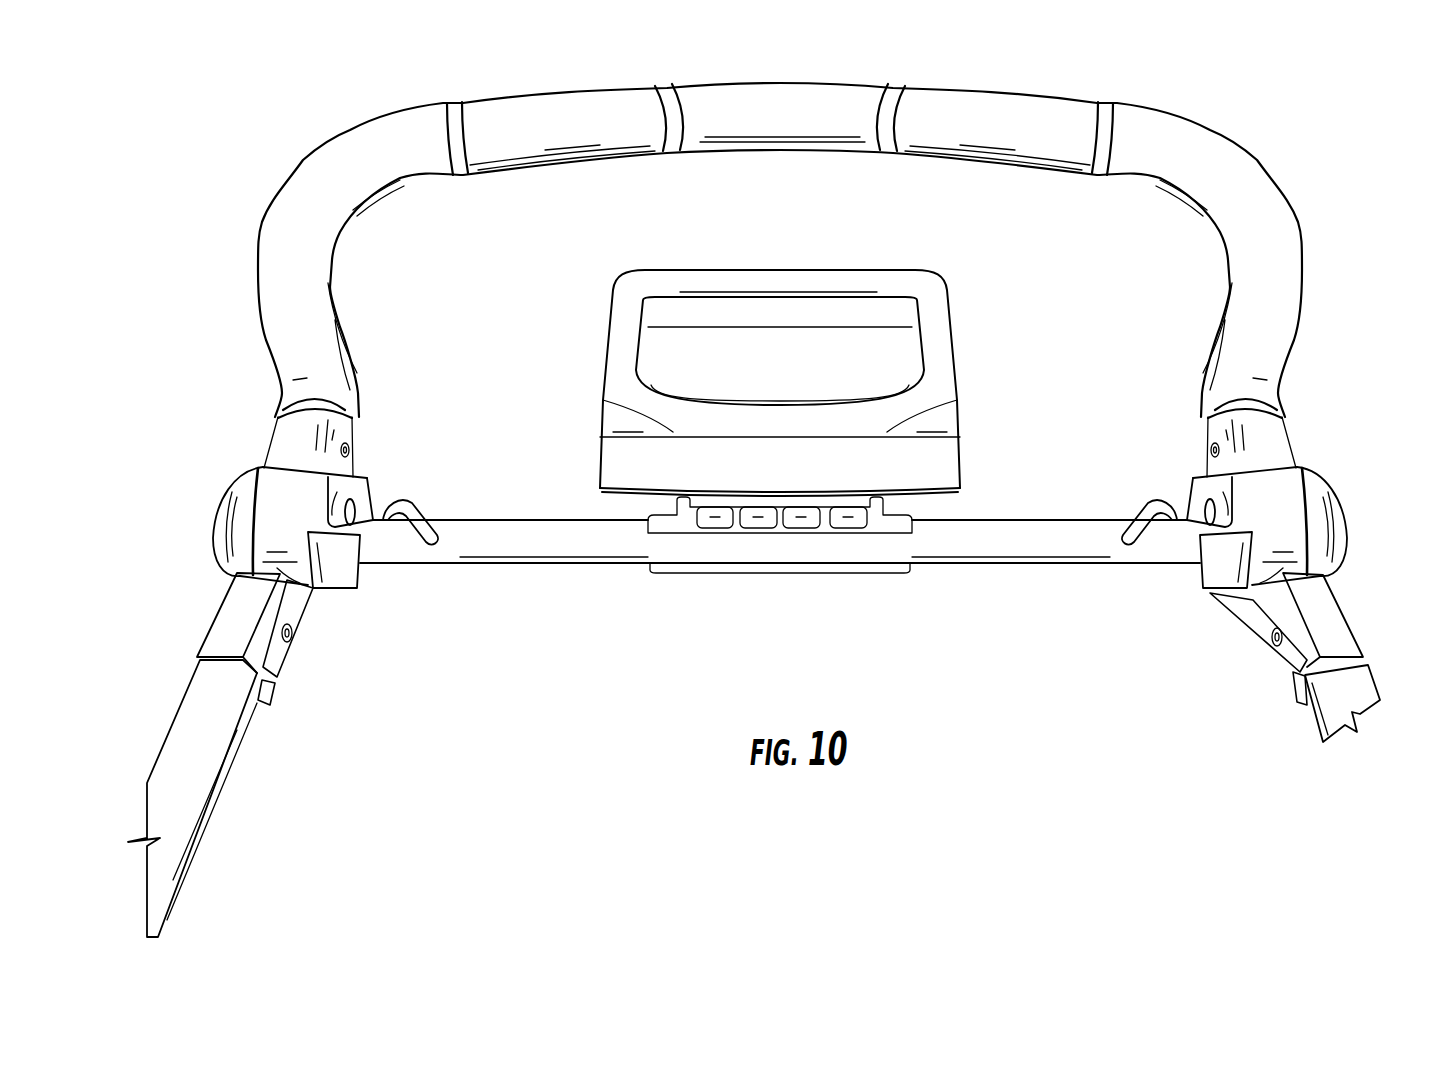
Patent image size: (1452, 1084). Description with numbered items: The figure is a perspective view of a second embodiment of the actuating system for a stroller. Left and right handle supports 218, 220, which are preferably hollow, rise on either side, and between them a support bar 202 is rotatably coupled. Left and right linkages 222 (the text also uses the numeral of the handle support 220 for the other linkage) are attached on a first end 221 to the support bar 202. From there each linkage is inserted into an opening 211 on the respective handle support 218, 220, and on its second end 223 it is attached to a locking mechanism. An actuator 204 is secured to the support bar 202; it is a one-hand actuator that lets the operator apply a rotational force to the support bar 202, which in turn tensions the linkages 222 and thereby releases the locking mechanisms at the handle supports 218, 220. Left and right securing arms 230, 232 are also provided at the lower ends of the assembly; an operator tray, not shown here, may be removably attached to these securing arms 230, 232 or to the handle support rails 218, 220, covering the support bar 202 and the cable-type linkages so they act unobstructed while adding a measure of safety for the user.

The support bar 202 is at (618, 543).
The actuator 204 is at (945, 333).
The openings 211 is at (1300, 712).
The handle support 218 is at (1347, 686).
The handle support 220 is at (205, 707).
The first end 221 is at (1240, 625).
The linkage 222 is at (308, 625).
The second end 223 is at (1150, 498).
The securing arm 230 is at (1318, 612).
The securing arm 232 is at (240, 602).